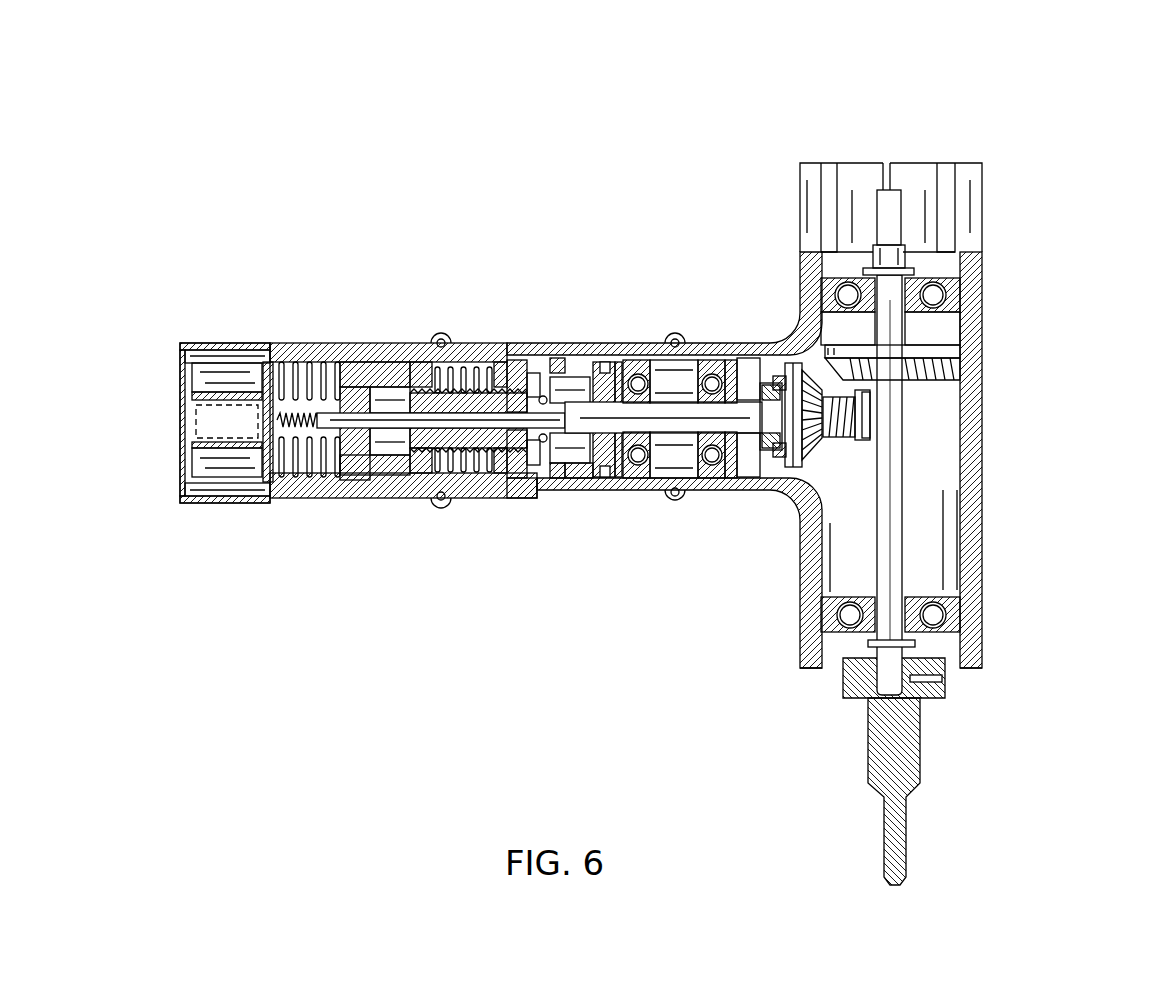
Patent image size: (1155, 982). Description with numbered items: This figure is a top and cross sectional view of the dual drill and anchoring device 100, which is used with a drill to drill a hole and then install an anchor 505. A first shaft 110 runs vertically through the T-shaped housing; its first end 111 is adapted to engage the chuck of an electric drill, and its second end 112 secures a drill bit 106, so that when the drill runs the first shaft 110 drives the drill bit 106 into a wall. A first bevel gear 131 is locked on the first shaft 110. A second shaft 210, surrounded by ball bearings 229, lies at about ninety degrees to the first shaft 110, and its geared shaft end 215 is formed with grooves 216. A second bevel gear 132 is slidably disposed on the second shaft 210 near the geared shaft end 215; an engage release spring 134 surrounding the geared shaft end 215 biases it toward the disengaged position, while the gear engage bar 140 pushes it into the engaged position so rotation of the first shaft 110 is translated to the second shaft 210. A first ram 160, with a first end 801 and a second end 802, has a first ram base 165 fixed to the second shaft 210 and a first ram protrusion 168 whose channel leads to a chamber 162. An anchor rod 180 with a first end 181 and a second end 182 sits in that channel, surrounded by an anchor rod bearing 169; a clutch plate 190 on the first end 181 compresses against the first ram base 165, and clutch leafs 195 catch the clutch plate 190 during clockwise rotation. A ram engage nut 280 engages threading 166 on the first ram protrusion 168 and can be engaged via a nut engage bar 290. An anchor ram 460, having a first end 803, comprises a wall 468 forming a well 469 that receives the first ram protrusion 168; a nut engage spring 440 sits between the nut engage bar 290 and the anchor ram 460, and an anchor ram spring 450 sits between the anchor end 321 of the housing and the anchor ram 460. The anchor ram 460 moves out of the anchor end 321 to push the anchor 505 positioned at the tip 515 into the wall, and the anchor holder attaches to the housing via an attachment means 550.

The dual drill and anchoring device 100 is at (692, 116).
The drill bit 106 is at (908, 857).
The first shaft 110 is at (890, 580).
The first end 111 is at (892, 222).
The second end 112 is at (940, 679).
The first bevel gear 131 is at (977, 337).
The second bevel gear 132 is at (793, 490).
The engage release spring 134 is at (840, 440).
The gear engage bar 140 is at (775, 372).
The first ram 160 is at (523, 500).
The chamber 162 is at (563, 380).
The first ram base 165 is at (617, 365).
The threading 166 is at (447, 375).
The first ram protrusion 168 is at (415, 480).
The anchor rod bearing 169 is at (480, 375).
The anchor rod 180 is at (385, 487).
The first end 181 is at (518, 365).
The second end 182 is at (302, 372).
The clutch plate 190 is at (575, 480).
The clutch leafs 195 is at (588, 490).
The second shaft 210 is at (670, 500).
The geared shaft end 215 is at (853, 418).
The grooves 216 is at (828, 330).
The ball bearings 229 is at (705, 343).
The ram engage nut 280 is at (477, 493).
The nut engage bar 290 is at (505, 475).
The anchor end 321 is at (287, 487).
The nut engage spring 440 is at (464, 392).
The anchor ram spring 450 is at (333, 460).
The anchor ram 460 is at (340, 340).
The wall 468 is at (373, 343).
The well 469 is at (392, 408).
The anchor 505 is at (245, 418).
The tip 515 is at (215, 444).
The attachment means 550 is at (233, 502).
The first end 801 is at (620, 490).
The second end 802 is at (400, 490).
The first end 803 is at (420, 490).